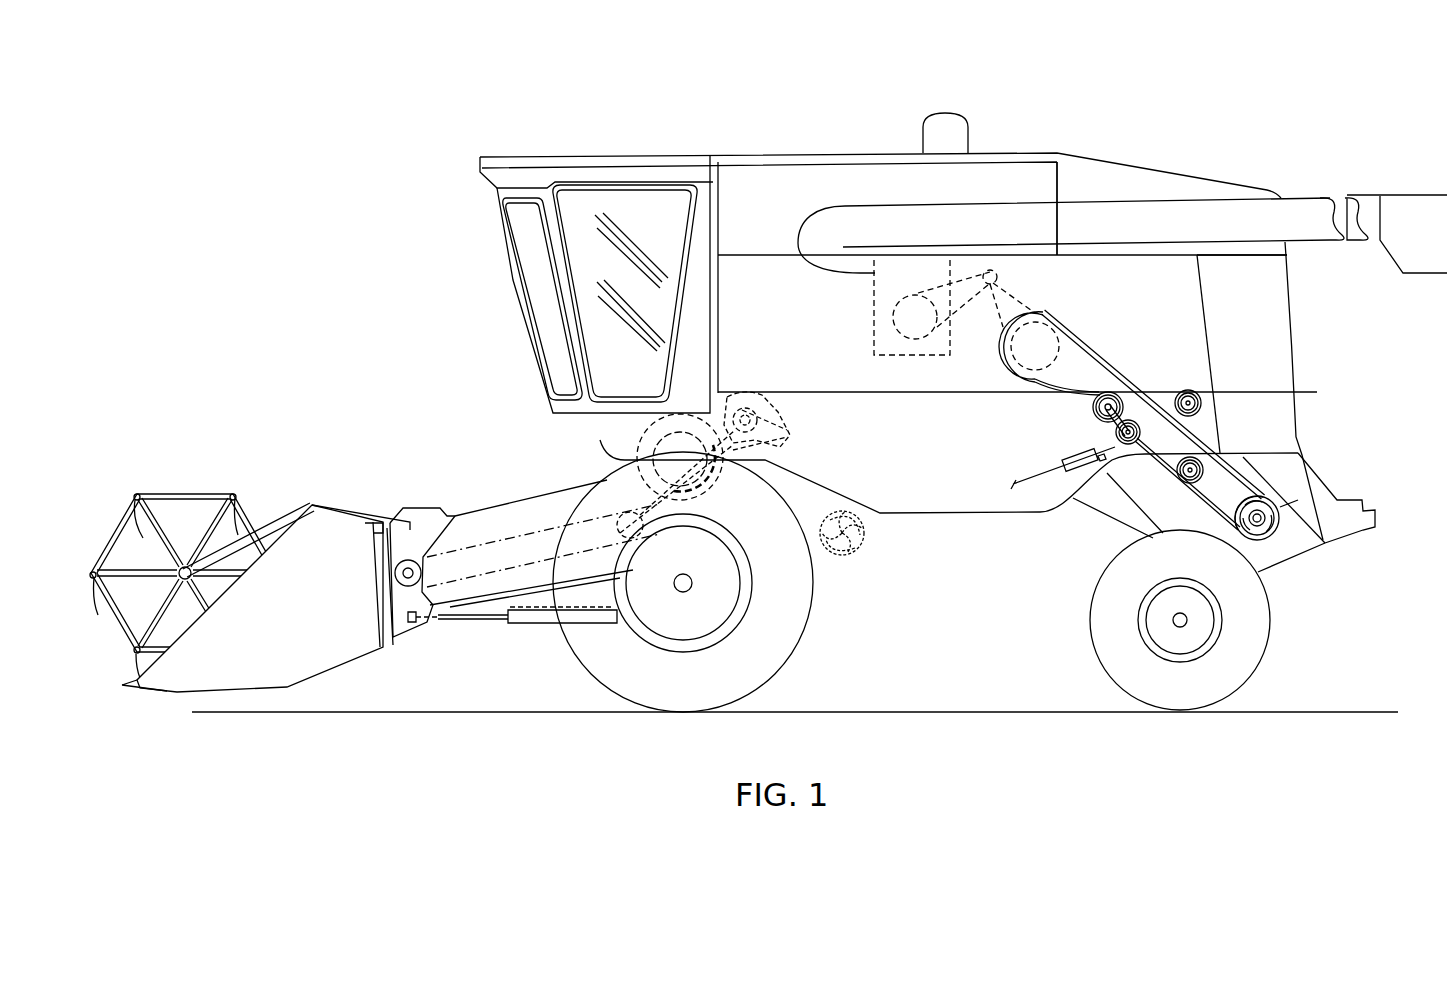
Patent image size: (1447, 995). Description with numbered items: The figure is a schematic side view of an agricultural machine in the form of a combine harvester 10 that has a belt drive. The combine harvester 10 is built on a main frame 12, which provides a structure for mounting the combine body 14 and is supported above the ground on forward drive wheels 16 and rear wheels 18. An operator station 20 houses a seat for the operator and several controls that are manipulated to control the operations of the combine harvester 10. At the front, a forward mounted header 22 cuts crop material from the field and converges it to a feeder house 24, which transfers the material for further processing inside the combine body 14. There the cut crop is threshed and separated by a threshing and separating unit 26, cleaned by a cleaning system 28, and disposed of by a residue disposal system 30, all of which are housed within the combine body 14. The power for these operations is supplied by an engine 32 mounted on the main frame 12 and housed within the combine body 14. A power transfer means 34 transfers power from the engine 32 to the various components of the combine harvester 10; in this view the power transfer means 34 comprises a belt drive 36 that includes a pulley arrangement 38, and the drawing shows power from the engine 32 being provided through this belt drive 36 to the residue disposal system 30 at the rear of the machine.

The combine harvester 10 is at (1190, 112).
The main frame 12 is at (1295, 553).
The combine body 14 is at (1237, 307).
The forward drive wheels 16 is at (638, 672).
The rear wheels 18 is at (1217, 678).
The operator station 20 is at (515, 262).
The header 22 is at (255, 635).
The feeder house 24 is at (523, 518).
The threshing and separating unit 26 is at (603, 445).
The cleaning system 28 is at (852, 560).
The residue disposal system 30 is at (1272, 487).
The engine 32 is at (837, 273).
The power transfer means 34 is at (1075, 307).
The belt drive 36 is at (1133, 383).
The pulley arrangement 38 is at (1325, 543).